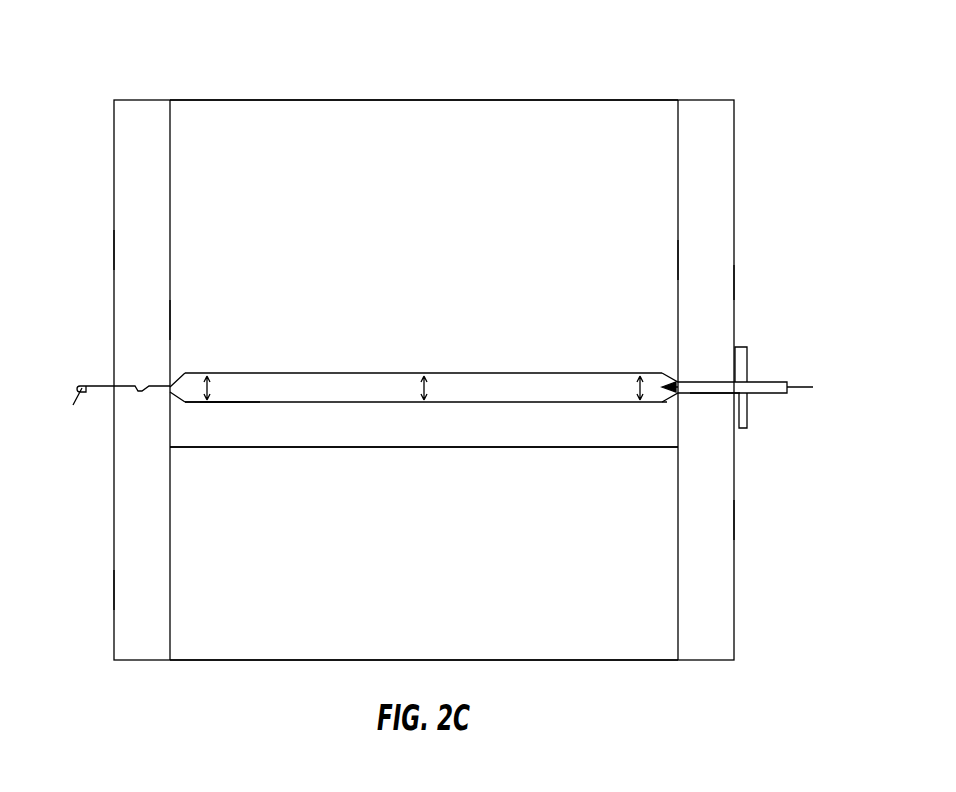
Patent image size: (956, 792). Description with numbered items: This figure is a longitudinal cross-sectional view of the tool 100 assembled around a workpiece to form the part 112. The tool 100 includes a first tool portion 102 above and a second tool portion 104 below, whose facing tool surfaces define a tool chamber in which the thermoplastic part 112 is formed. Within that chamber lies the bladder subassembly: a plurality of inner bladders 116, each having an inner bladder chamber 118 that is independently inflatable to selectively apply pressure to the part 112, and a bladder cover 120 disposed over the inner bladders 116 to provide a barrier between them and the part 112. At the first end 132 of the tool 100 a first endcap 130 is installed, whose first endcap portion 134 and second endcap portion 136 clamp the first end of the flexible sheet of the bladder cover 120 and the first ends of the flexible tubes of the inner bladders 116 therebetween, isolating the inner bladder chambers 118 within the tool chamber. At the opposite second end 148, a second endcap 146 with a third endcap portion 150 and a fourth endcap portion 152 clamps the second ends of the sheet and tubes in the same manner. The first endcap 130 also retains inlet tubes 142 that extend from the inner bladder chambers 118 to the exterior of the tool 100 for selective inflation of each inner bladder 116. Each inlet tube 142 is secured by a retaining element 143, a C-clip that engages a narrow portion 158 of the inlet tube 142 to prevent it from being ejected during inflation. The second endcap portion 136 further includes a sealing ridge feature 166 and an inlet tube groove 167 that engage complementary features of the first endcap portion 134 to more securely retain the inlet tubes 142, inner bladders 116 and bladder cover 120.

The tool 100 is at (133, 50).
The first tool portion 102 is at (441, 253).
The second tool portion 104 is at (441, 535).
The part 112 is at (441, 435).
The inner bladder 116 is at (212, 404).
The inner bladder chamber 118 is at (197, 383).
The bladder cover 120 is at (232, 404).
The first endcap 130 is at (729, 190).
The first end 132 is at (678, 259).
The first endcap portion 134 is at (729, 283).
The second endcap portion 136 is at (729, 518).
The inlet tube 142 is at (760, 396).
The retaining element 143 is at (742, 365).
The second endcap 146 is at (122, 188).
The second end 148 is at (170, 318).
The third endcap portion 150 is at (122, 260).
The fourth endcap portion 152 is at (122, 588).
The narrow portion 158 is at (741, 398).
The sealing ridge feature 166 is at (140, 389).
The inlet tube groove 167 is at (708, 396).